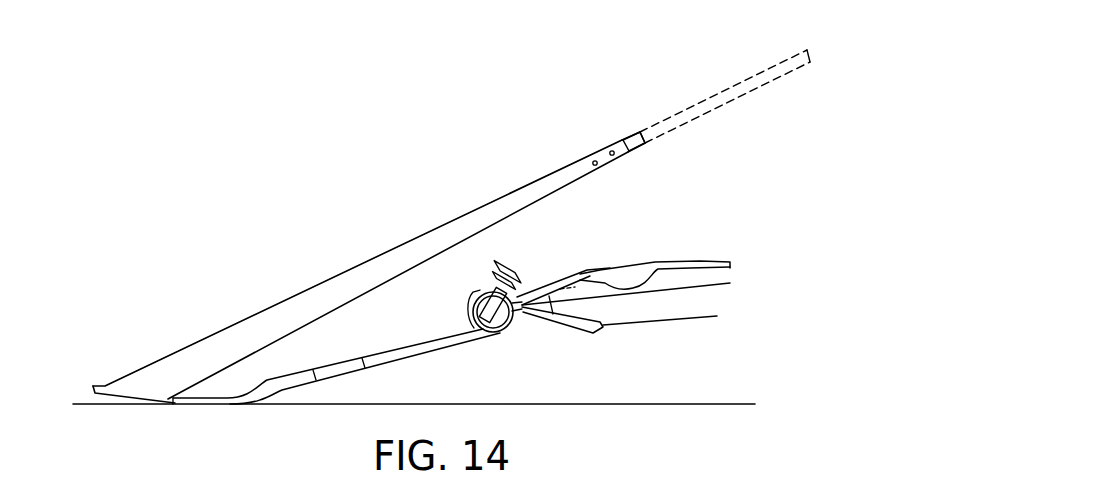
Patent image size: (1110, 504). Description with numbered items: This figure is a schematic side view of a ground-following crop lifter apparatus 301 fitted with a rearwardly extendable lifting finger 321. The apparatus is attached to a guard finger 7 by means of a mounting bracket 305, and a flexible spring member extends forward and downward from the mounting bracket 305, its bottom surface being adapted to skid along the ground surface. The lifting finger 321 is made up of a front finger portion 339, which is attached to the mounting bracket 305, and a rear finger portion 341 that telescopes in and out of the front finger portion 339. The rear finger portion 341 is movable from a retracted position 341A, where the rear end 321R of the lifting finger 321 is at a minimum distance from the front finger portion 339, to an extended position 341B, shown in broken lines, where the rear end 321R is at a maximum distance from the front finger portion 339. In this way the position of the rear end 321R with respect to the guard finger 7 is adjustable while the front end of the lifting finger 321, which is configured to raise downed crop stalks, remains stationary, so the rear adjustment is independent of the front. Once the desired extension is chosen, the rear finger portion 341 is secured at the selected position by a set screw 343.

The crop lifter apparatus 301 is at (196, 216).
The lifting finger 321 is at (322, 282).
The front finger portion 339 is at (433, 228).
The rear finger portion 341 is at (657, 81).
The retracted position 341A is at (623, 137).
The extended position 341B is at (807, 50).
The rear end of lifting finger 321R is at (643, 146).
The set screw 343 is at (603, 163).
The mounting bracket 305 is at (537, 290).
The guard finger 7 is at (623, 325).